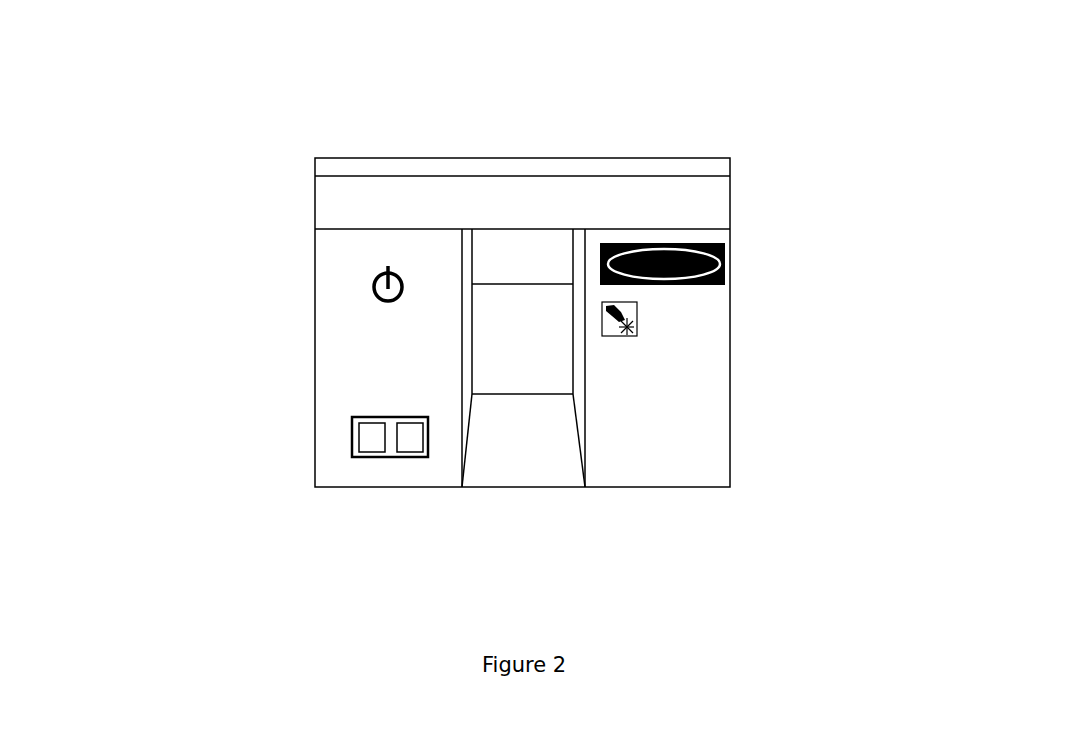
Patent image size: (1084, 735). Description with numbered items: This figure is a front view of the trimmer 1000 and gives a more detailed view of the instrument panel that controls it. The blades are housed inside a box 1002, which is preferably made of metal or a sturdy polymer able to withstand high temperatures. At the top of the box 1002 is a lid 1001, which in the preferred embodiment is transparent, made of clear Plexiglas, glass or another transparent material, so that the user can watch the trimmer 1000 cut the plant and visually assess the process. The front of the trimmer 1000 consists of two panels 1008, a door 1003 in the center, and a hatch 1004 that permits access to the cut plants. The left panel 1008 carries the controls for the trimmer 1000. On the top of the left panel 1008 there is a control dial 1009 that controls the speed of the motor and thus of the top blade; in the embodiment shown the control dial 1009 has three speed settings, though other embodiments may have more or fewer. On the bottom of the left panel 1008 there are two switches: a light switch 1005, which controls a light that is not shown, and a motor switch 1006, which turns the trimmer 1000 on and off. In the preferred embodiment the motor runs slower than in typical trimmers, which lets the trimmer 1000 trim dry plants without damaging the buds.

The trimmer 1000 is at (285, 127).
The lid 1001 is at (722, 167).
The box 1002 is at (720, 207).
The door 1003 is at (690, 321).
The hatch 1004 is at (645, 459).
The light switch 1005 is at (280, 486).
The motor switch 1006 is at (365, 445).
The panels 1008 is at (372, 367).
The control dial 1009 is at (380, 292).